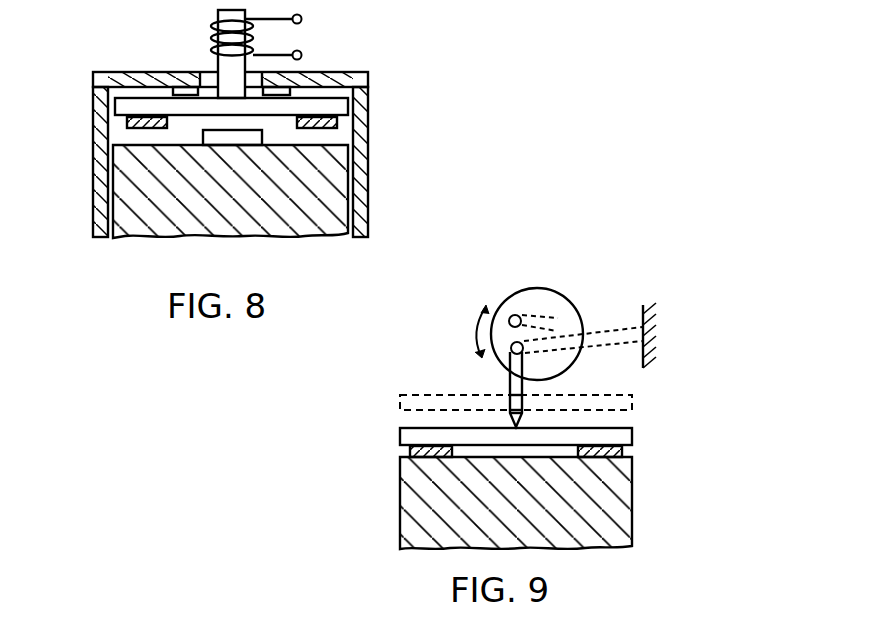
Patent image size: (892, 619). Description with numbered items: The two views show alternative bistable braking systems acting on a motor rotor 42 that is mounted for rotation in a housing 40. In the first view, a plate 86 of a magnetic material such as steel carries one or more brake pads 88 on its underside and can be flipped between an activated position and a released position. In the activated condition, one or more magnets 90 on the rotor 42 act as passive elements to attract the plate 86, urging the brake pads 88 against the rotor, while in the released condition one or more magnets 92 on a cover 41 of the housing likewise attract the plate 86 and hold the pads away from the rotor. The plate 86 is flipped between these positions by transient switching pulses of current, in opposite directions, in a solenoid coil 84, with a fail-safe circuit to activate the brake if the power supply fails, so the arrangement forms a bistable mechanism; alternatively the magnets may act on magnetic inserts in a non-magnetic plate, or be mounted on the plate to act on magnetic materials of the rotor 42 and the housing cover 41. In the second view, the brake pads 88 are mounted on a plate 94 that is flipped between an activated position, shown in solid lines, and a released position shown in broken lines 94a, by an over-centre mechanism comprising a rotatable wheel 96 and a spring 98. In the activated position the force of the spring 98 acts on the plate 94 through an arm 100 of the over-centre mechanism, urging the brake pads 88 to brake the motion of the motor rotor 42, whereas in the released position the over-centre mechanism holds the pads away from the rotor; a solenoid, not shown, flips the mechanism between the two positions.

In FIG. 8, the housing 40 is at (368, 181).
In FIG. 8, the cover 41 is at (370, 72).
In FIG. 8, the motor rotor 42 is at (265, 219).
In FIG. 9, the motor rotor 42 is at (625, 522).
In FIG. 8, the solenoid coil 84 is at (211, 43).
In FIG. 8, the plate 86 is at (132, 105).
In FIG. 8, the brake pads 88 is at (128, 122).
In FIG. 9, the brake pads 88 is at (410, 448).
In FIG. 8, the magnets 90 is at (203, 135).
In FIG. 8, the magnets 92 is at (190, 91).
In FIG. 9, the plate 94 is at (632, 437).
In FIG. 9, the released position of plate 94a is at (632, 402).
In FIG. 9, the rotatable wheel 96 is at (581, 278).
In FIG. 9, the spring 98 is at (608, 328).
In FIG. 9, the arm 100 is at (507, 383).